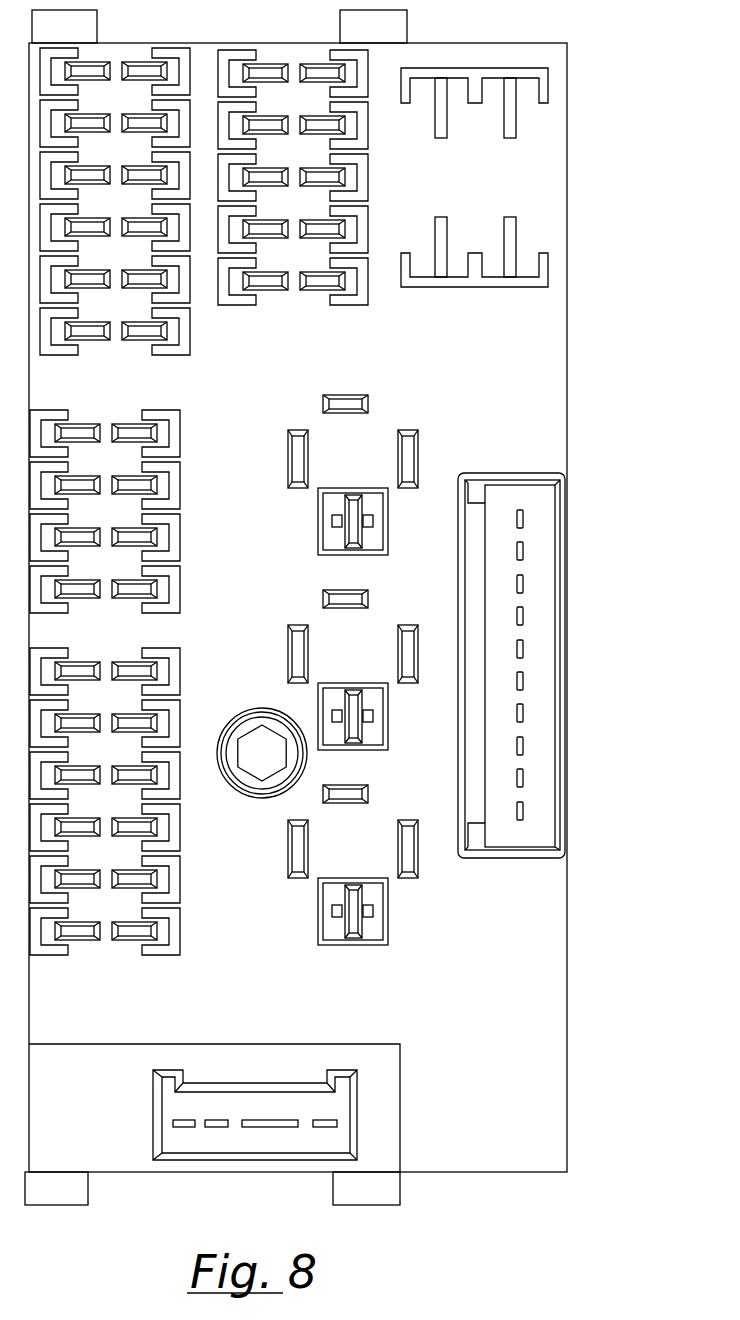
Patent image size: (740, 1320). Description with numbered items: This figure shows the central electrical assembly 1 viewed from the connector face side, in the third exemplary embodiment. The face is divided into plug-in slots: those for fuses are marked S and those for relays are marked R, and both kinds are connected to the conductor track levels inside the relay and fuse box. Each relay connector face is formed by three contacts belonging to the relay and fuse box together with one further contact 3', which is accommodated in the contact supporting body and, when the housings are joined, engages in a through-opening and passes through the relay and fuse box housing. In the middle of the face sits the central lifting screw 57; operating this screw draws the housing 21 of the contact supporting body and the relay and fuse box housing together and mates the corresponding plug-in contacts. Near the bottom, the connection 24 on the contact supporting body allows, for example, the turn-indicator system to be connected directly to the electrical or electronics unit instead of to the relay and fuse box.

The central electrical assembly 1 is at (580, 951).
The further contact 3' is at (374, 867).
The housing 21 is at (102, 1130).
The connection 24 is at (228, 1140).
The central lifting screw 57 is at (257, 742).
The plug-in slots for fuses S is at (105, 682).
The plug-in slots for relays R is at (343, 572).